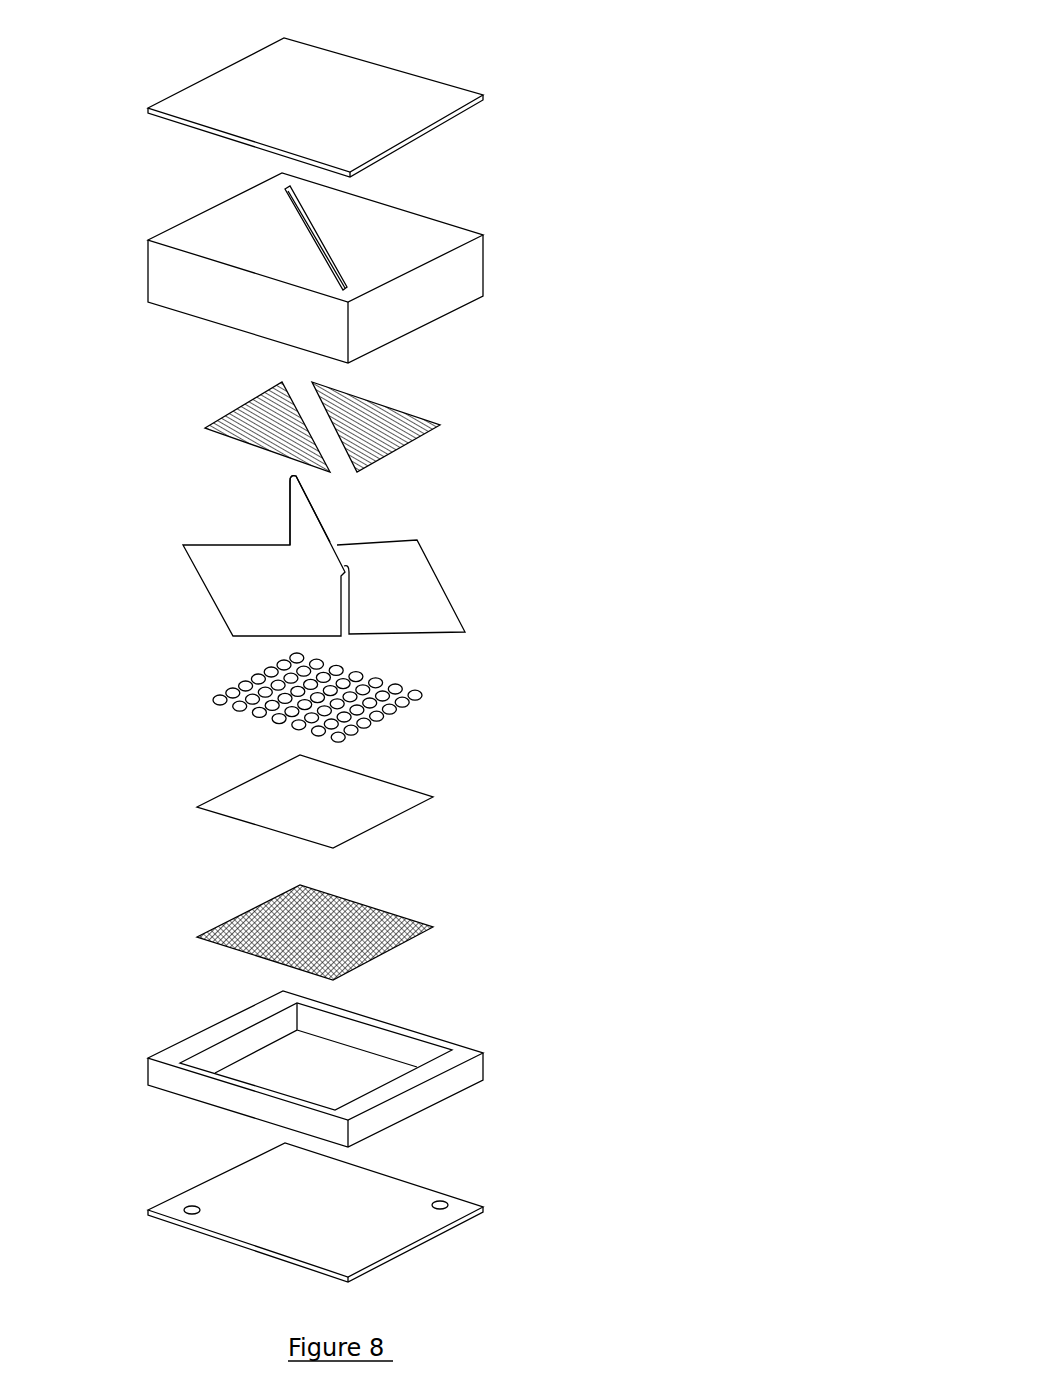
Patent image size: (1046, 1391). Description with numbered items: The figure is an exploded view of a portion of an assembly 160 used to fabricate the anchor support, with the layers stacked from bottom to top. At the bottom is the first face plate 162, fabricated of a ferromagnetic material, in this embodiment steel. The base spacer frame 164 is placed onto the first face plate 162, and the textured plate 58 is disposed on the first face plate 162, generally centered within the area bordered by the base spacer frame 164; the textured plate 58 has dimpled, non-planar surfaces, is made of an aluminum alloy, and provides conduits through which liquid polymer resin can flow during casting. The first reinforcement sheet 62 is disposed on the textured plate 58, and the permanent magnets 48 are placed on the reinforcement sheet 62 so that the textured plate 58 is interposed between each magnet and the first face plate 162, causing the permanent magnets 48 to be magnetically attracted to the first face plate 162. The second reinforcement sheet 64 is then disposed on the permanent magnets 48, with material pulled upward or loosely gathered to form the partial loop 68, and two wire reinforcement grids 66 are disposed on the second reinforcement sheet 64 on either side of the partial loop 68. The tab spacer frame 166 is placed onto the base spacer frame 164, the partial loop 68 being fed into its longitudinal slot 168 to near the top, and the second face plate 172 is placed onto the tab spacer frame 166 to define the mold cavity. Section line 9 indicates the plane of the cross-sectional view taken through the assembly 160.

The assembly 160 is at (709, 36).
The second face plate 172 is at (483, 97).
The tab spacer frame 166 is at (403, 268).
The rectangular aperture 168 is at (281, 209).
The wire reinforcement grid 66 is at (287, 397).
The second reinforcement sheet 64 is at (398, 556).
The partial loop 68 is at (283, 504).
The permanent magnets 48 is at (600, 645).
The first reinforcement sheet 62 is at (433, 797).
The textured plate 58 is at (433, 927).
The base spacer frame 164 is at (470, 1069).
The first face plate 162 is at (460, 1205).
The section line 9- 9 is at (220, 1290).